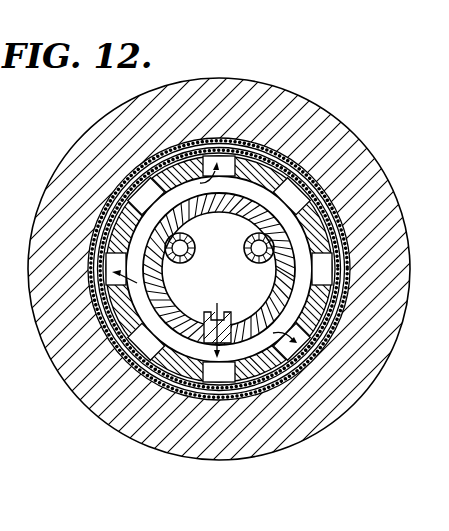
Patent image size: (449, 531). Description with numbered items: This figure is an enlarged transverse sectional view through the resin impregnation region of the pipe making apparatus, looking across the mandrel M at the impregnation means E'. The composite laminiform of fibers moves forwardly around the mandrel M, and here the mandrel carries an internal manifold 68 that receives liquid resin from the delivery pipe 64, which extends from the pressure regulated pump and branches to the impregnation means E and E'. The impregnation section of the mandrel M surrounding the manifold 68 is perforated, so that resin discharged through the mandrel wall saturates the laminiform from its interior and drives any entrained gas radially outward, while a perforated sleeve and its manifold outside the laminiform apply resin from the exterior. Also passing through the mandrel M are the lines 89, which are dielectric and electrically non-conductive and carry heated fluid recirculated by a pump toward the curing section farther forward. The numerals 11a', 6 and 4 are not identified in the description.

The ball bearing race ring 11a' is at (219, 232).
The mandrel M is at (328, 211).
The impregnation means E' is at (219, 269).
The manifold 68 is at (216, 199).
The lines 89 is at (243, 248).
The delivery pipe 64 is at (235, 310).
The housing 6 is at (5, 175).
The frame 4 is at (439, 62).